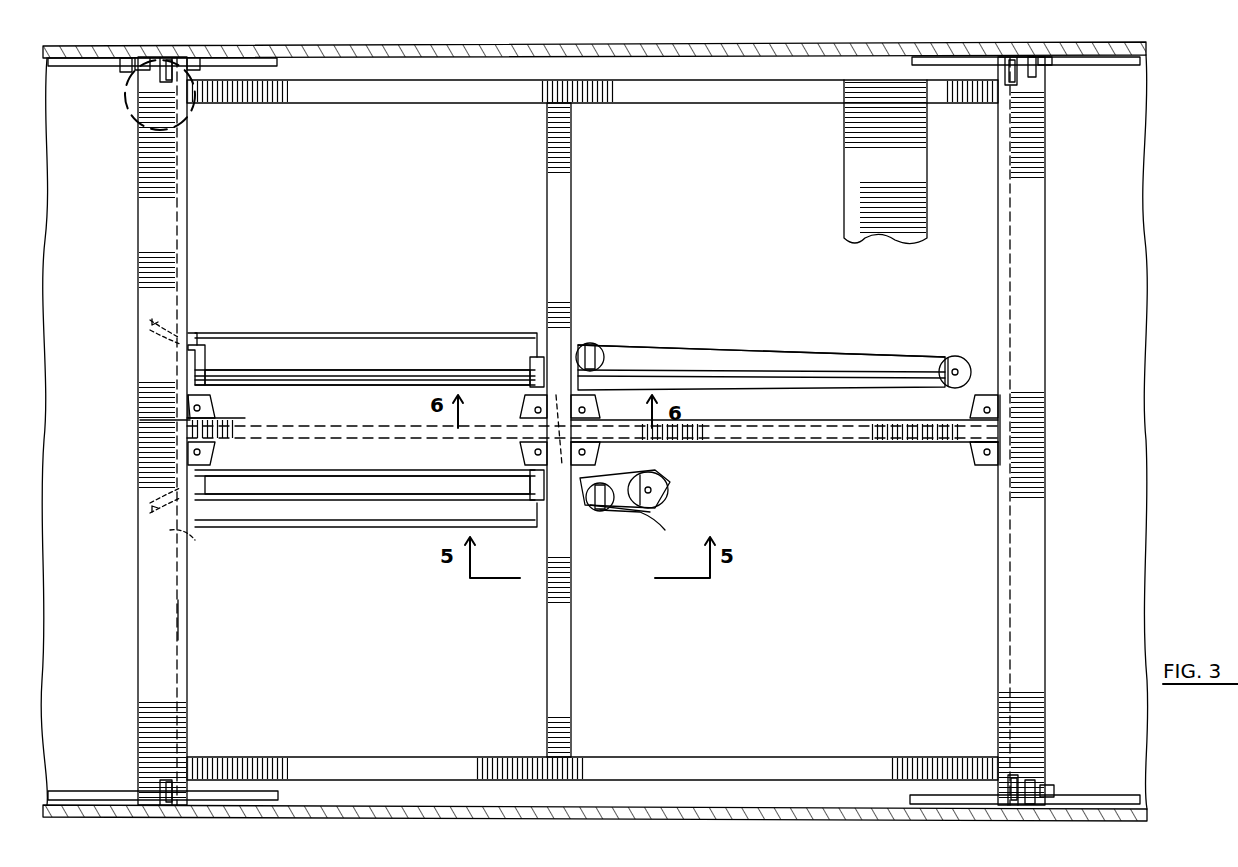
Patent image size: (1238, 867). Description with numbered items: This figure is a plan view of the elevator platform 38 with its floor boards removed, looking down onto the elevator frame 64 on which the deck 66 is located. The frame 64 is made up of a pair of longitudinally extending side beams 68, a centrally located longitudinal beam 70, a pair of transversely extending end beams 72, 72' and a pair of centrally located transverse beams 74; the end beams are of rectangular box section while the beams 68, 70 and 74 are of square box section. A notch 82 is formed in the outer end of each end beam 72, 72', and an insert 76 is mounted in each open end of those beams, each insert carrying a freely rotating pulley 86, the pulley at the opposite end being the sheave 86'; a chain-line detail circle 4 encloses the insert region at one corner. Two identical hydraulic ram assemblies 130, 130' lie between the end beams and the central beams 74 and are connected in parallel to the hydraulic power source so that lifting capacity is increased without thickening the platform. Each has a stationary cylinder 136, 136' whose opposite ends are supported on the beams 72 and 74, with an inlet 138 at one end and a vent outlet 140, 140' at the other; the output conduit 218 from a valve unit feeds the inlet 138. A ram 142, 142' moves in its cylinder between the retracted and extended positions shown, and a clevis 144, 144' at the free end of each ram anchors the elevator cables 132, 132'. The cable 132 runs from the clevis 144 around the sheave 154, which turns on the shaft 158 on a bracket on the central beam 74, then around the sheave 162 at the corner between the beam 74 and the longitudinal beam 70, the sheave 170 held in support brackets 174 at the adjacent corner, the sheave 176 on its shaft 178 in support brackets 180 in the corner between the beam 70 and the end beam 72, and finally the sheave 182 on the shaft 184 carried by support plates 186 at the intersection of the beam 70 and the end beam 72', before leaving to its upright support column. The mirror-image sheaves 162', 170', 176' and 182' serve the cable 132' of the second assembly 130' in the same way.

The detail circle for FIG. 4 is at (118, 118).
The elevator platform 38 is at (112, 401).
The elevator frame 64 is at (152, 352).
The deck 66 is at (850, 168).
The longitudinally extending side beams 68 is at (398, 98).
The centrally located longitudinally extending beam 70 is at (795, 445).
The transversely extending end beam 72 is at (204, 623).
The transversely extending end beam 72' is at (985, 431).
The transversely extending centrally located beams 74 is at (562, 650).
The insert 76 is at (172, 80).
The notch 82 is at (1036, 85).
The pulley 86 is at (1066, 781).
The sheave 86' is at (97, 84).
The extensible ram assembly 130 is at (369, 530).
The extensible ram assembly 130' is at (366, 428).
The elevator cable 132 is at (736, 499).
The elevator cable 132' is at (761, 368).
The stationary cylinder member 136 is at (367, 516).
The stationary cylinder member 136' is at (367, 343).
The inlet 138 is at (205, 352).
The vent outlet 140 is at (520, 519).
The vent outlet 140' is at (507, 344).
The ram 142 is at (645, 480).
The ram 142' is at (774, 368).
The clevis 144 is at (669, 490).
The clevis 144' is at (932, 386).
The sheave 154 is at (597, 511).
The shaft 158 is at (608, 515).
The sheave 162 is at (614, 455).
The sheave 162' is at (620, 368).
The sheave 170 is at (507, 458).
The sheave 170' is at (513, 403).
The support brackets 174 is at (530, 448).
The sheave 176 is at (229, 403).
The sheave 176' is at (233, 457).
The shaft 178 is at (188, 412).
The support brackets 180 is at (212, 408).
The sheave 182 is at (974, 475).
The sheave 182' is at (971, 369).
The shaft 184 is at (1000, 452).
The support plates 186 is at (978, 448).
The output conduit 218 is at (193, 452).